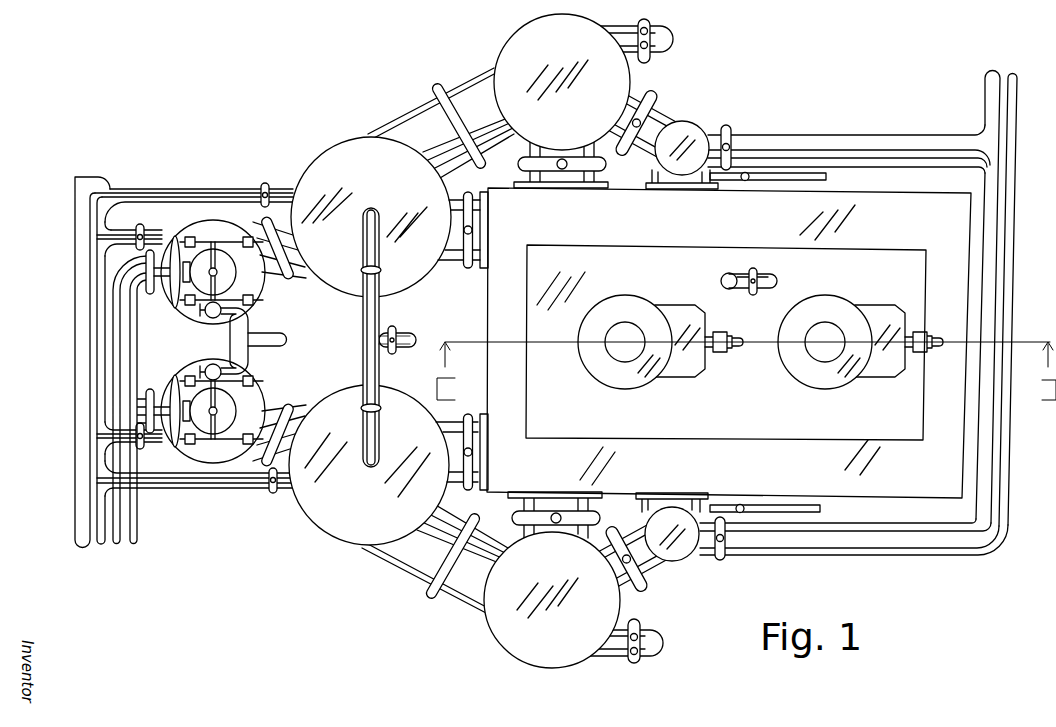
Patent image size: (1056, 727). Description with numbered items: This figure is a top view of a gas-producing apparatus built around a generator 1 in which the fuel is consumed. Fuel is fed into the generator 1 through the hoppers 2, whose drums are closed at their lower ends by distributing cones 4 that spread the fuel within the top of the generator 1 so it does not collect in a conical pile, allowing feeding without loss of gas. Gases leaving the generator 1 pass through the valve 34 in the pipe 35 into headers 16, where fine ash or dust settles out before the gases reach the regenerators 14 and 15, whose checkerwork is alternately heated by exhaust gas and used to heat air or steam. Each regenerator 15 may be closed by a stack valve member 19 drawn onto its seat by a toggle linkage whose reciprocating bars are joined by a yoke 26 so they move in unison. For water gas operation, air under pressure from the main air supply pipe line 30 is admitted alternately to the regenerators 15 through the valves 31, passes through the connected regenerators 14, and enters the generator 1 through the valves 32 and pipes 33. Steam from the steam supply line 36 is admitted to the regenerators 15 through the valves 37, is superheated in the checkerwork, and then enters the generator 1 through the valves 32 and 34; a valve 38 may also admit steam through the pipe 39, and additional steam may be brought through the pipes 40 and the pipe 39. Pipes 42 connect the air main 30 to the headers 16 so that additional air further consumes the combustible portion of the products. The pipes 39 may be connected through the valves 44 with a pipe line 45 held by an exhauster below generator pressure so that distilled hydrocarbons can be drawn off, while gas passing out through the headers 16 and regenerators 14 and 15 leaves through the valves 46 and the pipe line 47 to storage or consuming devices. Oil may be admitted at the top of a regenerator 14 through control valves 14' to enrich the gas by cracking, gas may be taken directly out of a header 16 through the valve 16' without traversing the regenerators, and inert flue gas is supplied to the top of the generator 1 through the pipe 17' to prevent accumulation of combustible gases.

The generator 1 is at (918, 583).
The hoppers 2 is at (873, 280).
The distributing cones 4 is at (993, 302).
The regenerators 14 is at (370, 340).
The control valves 14' is at (368, 337).
The regenerators 15 is at (213, 513).
The headers 16 is at (593, 341).
The valve 16' is at (649, 346).
The pipe 17' is at (767, 275).
The stack valve member 19 is at (283, 380).
The yoke 26 is at (237, 250).
The main air supply pipe line 30 is at (83, 333).
The valves 31 is at (172, 465).
The valves 32 is at (478, 508).
The pipes 33 is at (407, 422).
The valve 34 is at (613, 510).
The pipe 35 is at (615, 473).
The steam supply line 36 is at (272, 335).
The valves 37 is at (215, 318).
The valve 38 is at (677, 595).
The pipe 39 is at (707, 473).
The pipes 40 is at (853, 512).
The pipes 42 is at (259, 515).
The valves 44 is at (718, 593).
The pipe line 45 is at (807, 592).
The valves 46 is at (150, 290).
The pipe line 47 is at (167, 520).